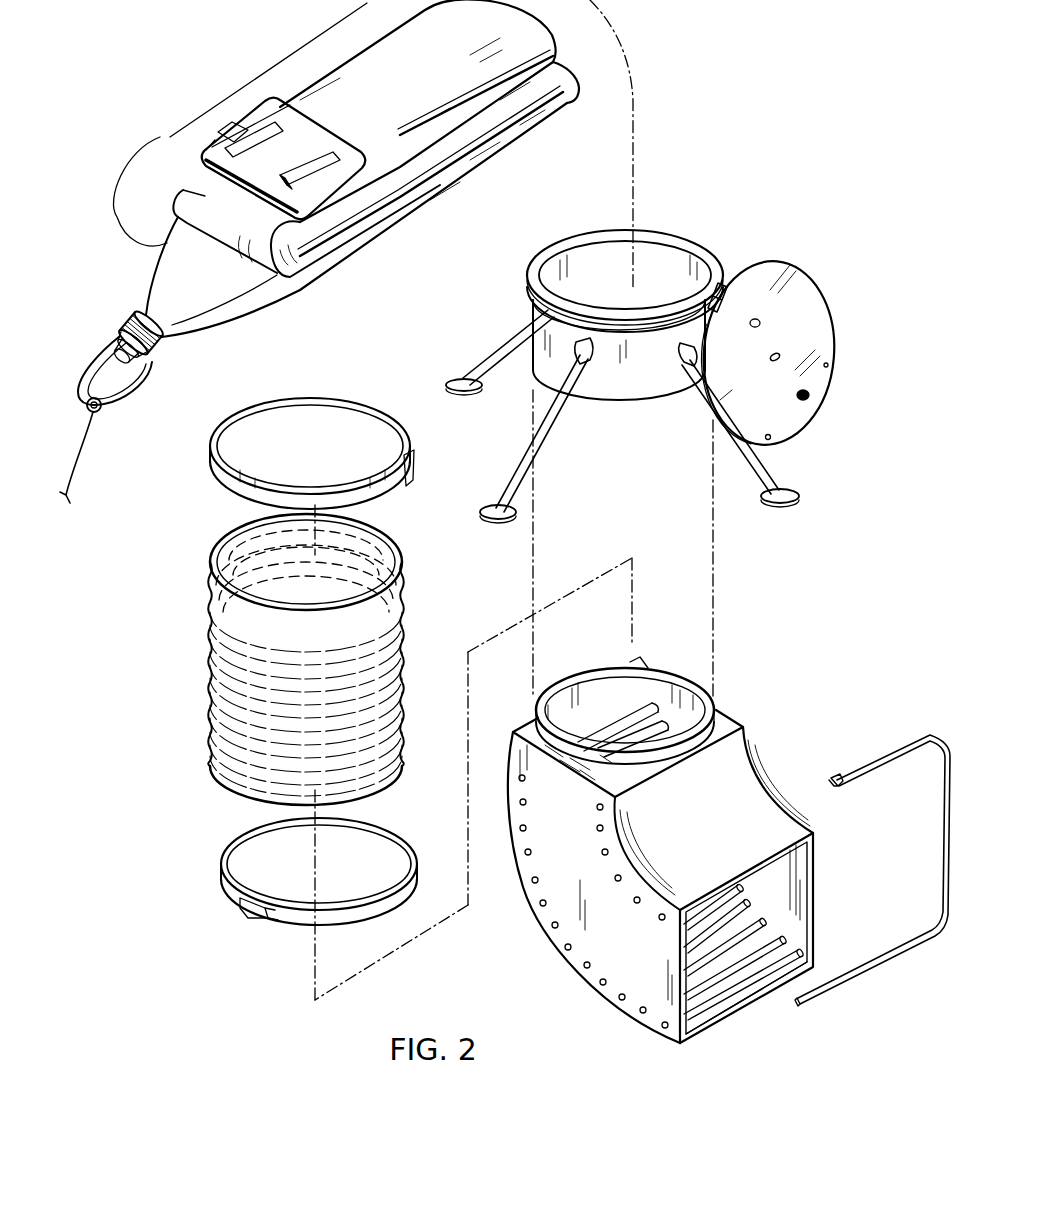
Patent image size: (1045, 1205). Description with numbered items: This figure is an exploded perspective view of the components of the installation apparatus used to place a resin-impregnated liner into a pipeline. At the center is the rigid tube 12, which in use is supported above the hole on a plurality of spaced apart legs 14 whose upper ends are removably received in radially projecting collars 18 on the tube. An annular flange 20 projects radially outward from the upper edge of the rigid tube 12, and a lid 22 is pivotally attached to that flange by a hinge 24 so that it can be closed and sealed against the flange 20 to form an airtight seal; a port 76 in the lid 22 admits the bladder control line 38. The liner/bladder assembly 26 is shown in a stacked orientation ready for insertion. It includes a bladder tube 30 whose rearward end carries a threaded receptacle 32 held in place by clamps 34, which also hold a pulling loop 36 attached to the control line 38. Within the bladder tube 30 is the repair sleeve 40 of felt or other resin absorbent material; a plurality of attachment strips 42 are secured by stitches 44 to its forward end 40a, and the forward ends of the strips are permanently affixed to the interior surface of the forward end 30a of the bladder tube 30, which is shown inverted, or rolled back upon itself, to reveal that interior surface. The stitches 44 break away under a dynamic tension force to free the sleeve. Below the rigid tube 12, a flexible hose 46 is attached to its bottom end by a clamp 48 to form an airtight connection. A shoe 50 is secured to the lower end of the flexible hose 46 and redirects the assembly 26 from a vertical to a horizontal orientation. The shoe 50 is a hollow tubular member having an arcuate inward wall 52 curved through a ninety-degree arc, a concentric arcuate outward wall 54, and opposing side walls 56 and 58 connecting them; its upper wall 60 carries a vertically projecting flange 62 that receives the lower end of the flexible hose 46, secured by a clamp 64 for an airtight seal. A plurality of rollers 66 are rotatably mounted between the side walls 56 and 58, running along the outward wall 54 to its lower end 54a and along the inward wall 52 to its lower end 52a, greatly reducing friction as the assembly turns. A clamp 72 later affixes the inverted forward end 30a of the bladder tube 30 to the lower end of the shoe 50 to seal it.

The rigid tube 12 is at (630, 395).
The legs 14 is at (493, 350).
The collars 18 is at (592, 362).
The annular flange 20 is at (692, 243).
The lid 22 is at (795, 292).
The hinge 24 is at (720, 282).
The liner/bladder assembly 26 is at (376, 236).
The bladder tube 30 is at (313, 270).
The forward end of bladder tube 30a is at (310, 130).
The threaded receptacle 32 is at (124, 338).
The clamps 34 is at (158, 358).
The pulling loop 36 is at (128, 397).
The bladder control line 38 is at (75, 468).
The repair sleeve 40 is at (198, 159).
The forward end of repair sleeve 40a is at (200, 145).
The attachment strips 42 is at (234, 148).
The stitches 44 is at (222, 128).
The flexible hose 46 is at (403, 633).
The clamp 48 is at (362, 407).
The shoe 50 is at (787, 756).
The arcuate inward wall 52 is at (743, 810).
The lower end of inward wall 52a is at (807, 830).
The arcuate outward wall 54 is at (747, 990).
The lower end of outward wall 54a is at (680, 1020).
The side wall 56 is at (826, 887).
The side wall 58 is at (600, 943).
The upper wall 60 is at (723, 722).
The flange 62 is at (710, 700).
The clamp 64 is at (387, 827).
The rollers 66 is at (790, 937).
The clamp 72 is at (918, 732).
The port 76 is at (778, 353).